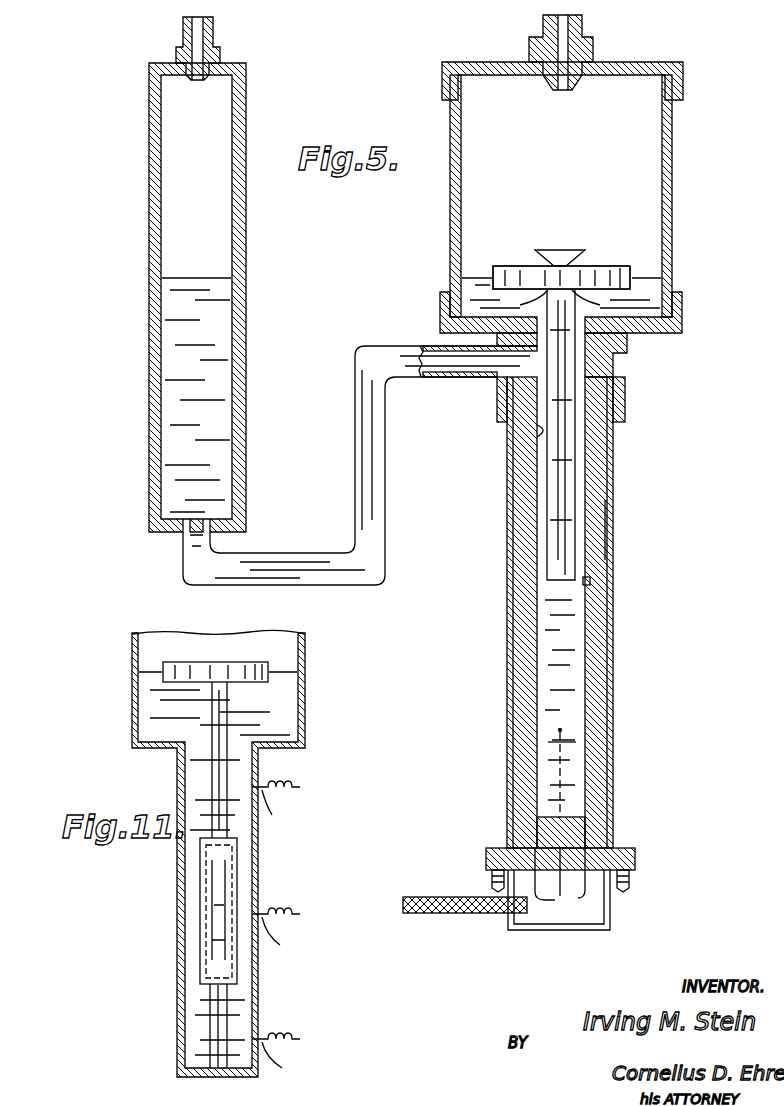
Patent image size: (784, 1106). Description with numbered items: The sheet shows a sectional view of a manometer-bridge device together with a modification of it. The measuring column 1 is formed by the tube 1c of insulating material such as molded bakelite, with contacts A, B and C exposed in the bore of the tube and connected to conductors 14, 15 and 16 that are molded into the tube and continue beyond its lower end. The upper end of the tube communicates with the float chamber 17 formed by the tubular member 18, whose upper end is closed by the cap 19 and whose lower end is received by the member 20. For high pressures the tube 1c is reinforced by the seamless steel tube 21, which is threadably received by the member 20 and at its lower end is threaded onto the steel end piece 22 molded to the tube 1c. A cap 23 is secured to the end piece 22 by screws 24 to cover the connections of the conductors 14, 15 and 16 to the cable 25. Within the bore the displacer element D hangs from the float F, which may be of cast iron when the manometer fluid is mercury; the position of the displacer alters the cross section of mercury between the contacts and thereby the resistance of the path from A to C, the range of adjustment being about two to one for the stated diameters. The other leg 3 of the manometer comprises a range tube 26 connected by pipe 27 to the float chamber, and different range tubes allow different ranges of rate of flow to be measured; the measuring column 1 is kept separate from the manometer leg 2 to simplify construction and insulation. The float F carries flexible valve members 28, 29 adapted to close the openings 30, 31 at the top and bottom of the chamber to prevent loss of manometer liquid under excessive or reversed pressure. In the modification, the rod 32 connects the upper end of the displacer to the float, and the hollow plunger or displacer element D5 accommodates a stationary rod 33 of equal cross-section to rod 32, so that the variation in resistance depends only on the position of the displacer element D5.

In FIG. 11, the measuring column 1 is at (176, 996).
In FIG. 5, the tube 1c is at (606, 534).
In FIG. 5, the manometer leg 2 is at (447, 201).
In FIG. 5, the other leg 3 is at (138, 238).
In FIG. 5, the conductor 14 is at (533, 620).
In FIG. 5, the conductor 15 is at (556, 742).
In FIG. 5, the conductor 16 is at (590, 667).
In FIG. 5, the float chamber 17 is at (633, 182).
In FIG. 5, the tubular member 18 is at (673, 156).
In FIG. 5, the cap 19 is at (684, 70).
In FIG. 5, the member 20 is at (684, 313).
In FIG. 5, the seamless steel tube 21 is at (612, 630).
In FIG. 5, the steel end piece 22 is at (500, 848).
In FIG. 5, the cap 23 is at (612, 922).
In FIG. 5, the screws 24 is at (492, 886).
In FIG. 5, the cable 25 is at (446, 914).
In FIG. 5, the range tube 26 is at (240, 345).
In FIG. 5, the pipe 27 is at (372, 484).
In FIG. 5, the flexible valve member 28 is at (553, 250).
In FIG. 5, the flexible valve member 29 is at (598, 292).
In FIG. 5, the opening 30 is at (578, 86).
In FIG. 5, the opening 31 is at (600, 332).
In FIG. 11, the rod 32 is at (212, 771).
In FIG. 11, the stationary rod 33 is at (230, 1014).
In FIG. 5, the contact A is at (540, 447).
In FIG. 11, the contact A is at (276, 806).
In FIG. 5, the contact B is at (563, 730).
In FIG. 11, the contact B is at (276, 1057).
In FIG. 5, the contact C is at (591, 583).
In FIG. 11, the contact C is at (276, 933).
In FIG. 5, the displacer element D is at (565, 508).
In FIG. 11, the displacer element D5 is at (256, 953).
In FIG. 5, the float F is at (588, 266).
In FIG. 11, the float F is at (165, 668).